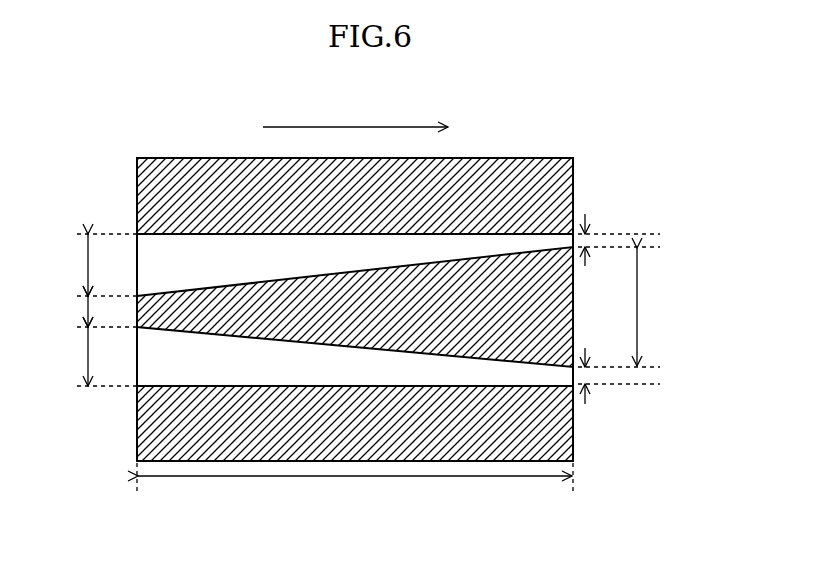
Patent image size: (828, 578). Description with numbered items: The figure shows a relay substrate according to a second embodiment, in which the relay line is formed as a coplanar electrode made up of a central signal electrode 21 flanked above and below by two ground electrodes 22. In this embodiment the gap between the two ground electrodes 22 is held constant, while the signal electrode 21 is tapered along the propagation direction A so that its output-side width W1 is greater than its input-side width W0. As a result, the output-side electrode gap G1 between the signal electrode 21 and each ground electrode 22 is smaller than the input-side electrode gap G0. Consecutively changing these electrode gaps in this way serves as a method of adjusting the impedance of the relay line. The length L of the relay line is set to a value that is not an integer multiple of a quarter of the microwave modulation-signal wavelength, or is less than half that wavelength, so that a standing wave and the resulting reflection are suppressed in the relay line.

The signal electrode 21 is at (463, 308).
The ground electrodes 22 is at (198, 188).
The propagation direction A is at (369, 128).
The length of the relay line L is at (355, 496).
The input-side electrode gap G0 is at (68, 310).
The input-side width of the signal electrode W0 is at (66, 311).
The output-side electrode gap G1 is at (604, 310).
The output-side width of the signal electrode W1 is at (658, 307).